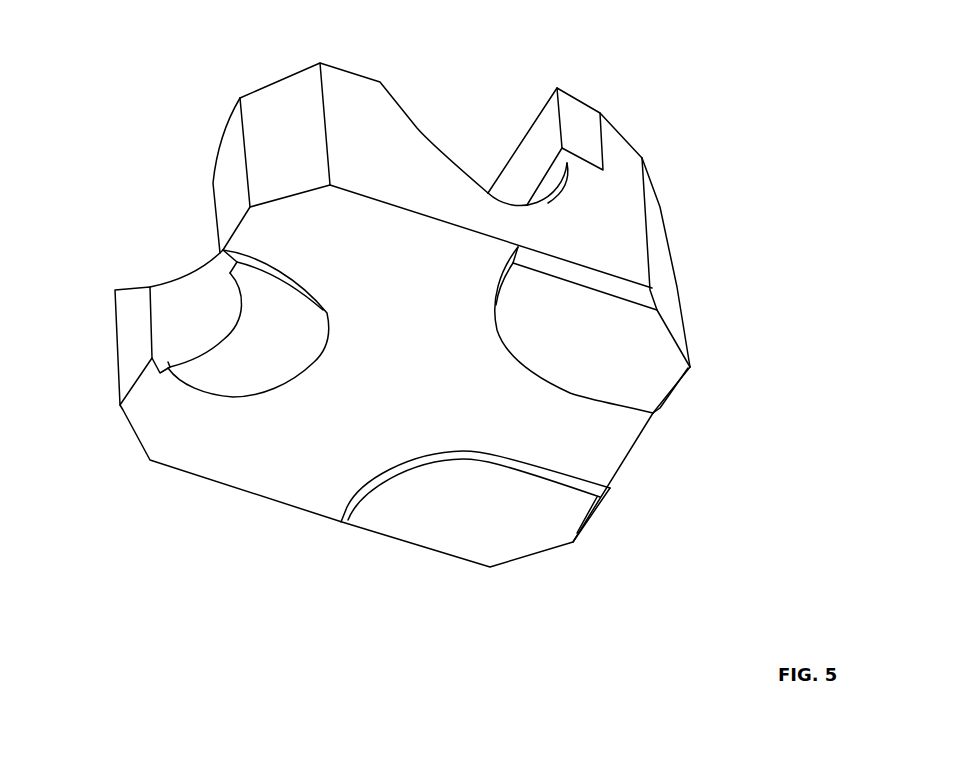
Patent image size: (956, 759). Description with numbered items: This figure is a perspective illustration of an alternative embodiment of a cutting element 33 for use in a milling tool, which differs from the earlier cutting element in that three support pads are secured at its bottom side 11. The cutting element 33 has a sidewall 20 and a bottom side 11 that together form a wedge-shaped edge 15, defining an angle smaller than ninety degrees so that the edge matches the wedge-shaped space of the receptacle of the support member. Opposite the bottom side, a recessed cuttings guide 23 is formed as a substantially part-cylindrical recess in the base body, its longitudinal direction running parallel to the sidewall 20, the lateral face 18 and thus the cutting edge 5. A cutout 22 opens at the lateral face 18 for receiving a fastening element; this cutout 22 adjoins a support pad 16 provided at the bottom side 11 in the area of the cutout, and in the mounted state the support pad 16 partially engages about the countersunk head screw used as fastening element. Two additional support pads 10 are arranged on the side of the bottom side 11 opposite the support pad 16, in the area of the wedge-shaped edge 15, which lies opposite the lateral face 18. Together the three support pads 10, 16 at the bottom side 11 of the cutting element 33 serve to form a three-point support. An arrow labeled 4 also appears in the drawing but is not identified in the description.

The cutting element 33 is at (410, 310).
The slot 4 is at (488, 193).
The cutting edge 5 is at (520, 170).
The recessed cuttings guide 23 is at (488, 193).
The cutout 22 is at (207, 297).
The lateral face 18 is at (135, 335).
The support pad 16 is at (248, 373).
The bottom side 11 is at (332, 412).
The support pads 10 is at (605, 385).
The sidewall 20 is at (677, 282).
The wedge-shaped edge 15 is at (637, 455).